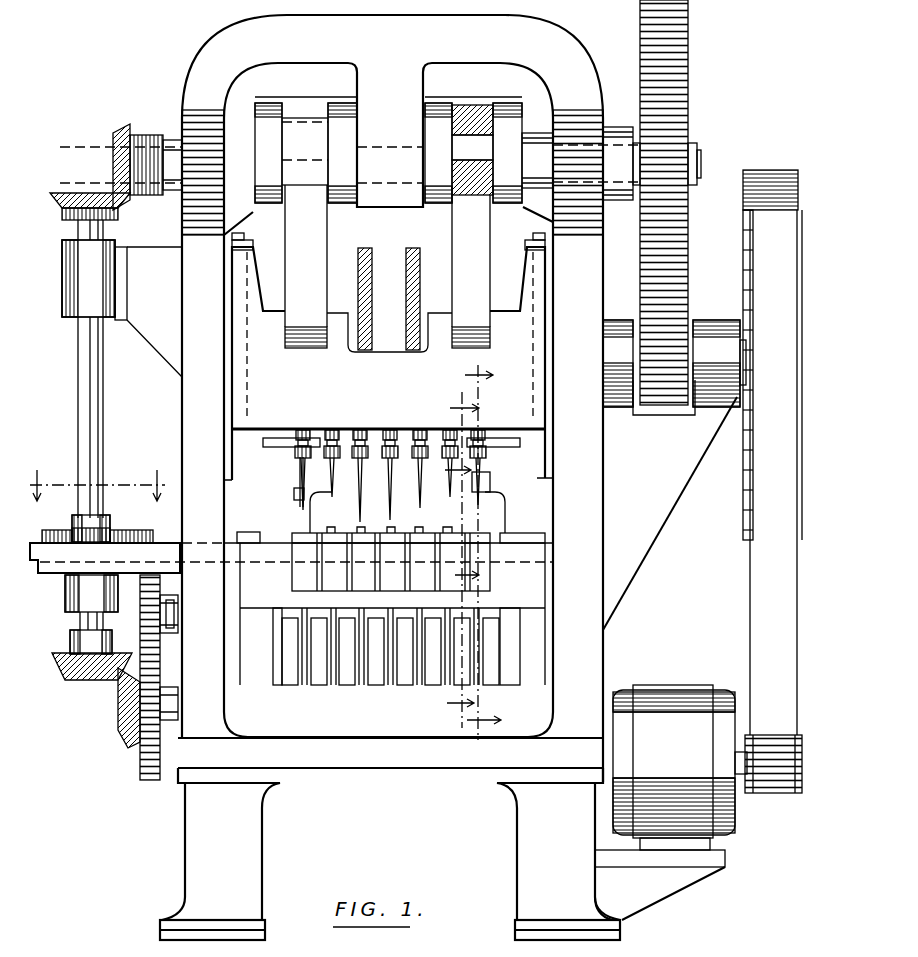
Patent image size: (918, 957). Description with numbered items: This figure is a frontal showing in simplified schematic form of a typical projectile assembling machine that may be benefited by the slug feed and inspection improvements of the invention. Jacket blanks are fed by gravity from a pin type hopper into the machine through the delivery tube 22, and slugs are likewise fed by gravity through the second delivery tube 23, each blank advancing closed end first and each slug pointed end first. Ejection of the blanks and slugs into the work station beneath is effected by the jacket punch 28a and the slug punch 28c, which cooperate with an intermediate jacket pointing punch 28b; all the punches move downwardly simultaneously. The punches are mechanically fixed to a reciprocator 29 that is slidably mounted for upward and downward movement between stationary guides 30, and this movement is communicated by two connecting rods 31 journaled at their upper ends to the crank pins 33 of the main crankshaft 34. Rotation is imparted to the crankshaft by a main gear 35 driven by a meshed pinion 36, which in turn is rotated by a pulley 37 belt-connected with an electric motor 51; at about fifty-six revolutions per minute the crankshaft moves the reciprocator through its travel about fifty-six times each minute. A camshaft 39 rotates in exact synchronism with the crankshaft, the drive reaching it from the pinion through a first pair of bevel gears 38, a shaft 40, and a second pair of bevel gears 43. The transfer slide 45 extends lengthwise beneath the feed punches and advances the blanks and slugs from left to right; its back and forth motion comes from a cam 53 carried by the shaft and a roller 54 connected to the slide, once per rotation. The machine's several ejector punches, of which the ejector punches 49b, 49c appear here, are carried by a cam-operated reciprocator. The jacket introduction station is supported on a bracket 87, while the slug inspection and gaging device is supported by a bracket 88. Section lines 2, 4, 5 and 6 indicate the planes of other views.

The section line 2- 2 is at (96, 475).
The section line 4- 4 is at (456, 560).
The section line 5- 5 is at (475, 551).
The section line 6- 6 is at (455, 523).
The delivery tube 22 is at (365, 274).
The second delivery tube 23 is at (415, 274).
The jacket punch 28a is at (315, 440).
The jacket pointing punch 28b is at (372, 414).
The slug punch 28c is at (500, 445).
The reciprocator 29 is at (250, 270).
The stationary guides 30 is at (540, 240).
The connecting rods 31 is at (305, 228).
The crank pins 33 is at (466, 132).
The main crankshaft 34 is at (694, 157).
The main gear 35 is at (680, 95).
The pinion 36 is at (668, 400).
The pulley 37 is at (747, 548).
The first pair of bevel gears 38 is at (88, 192).
The camshaft 39 is at (138, 607).
The shaft 40 is at (85, 383).
The second pair of bevel gears 43 is at (115, 705).
The transfer slide 45 is at (548, 548).
The ejector punch 49b is at (338, 625).
The ejector punch 49c is at (484, 627).
The electric motor 51 is at (692, 690).
The cam 53 is at (113, 532).
The roller 54 is at (47, 530).
The bracket 87 is at (296, 498).
The bracket 88 is at (503, 500).